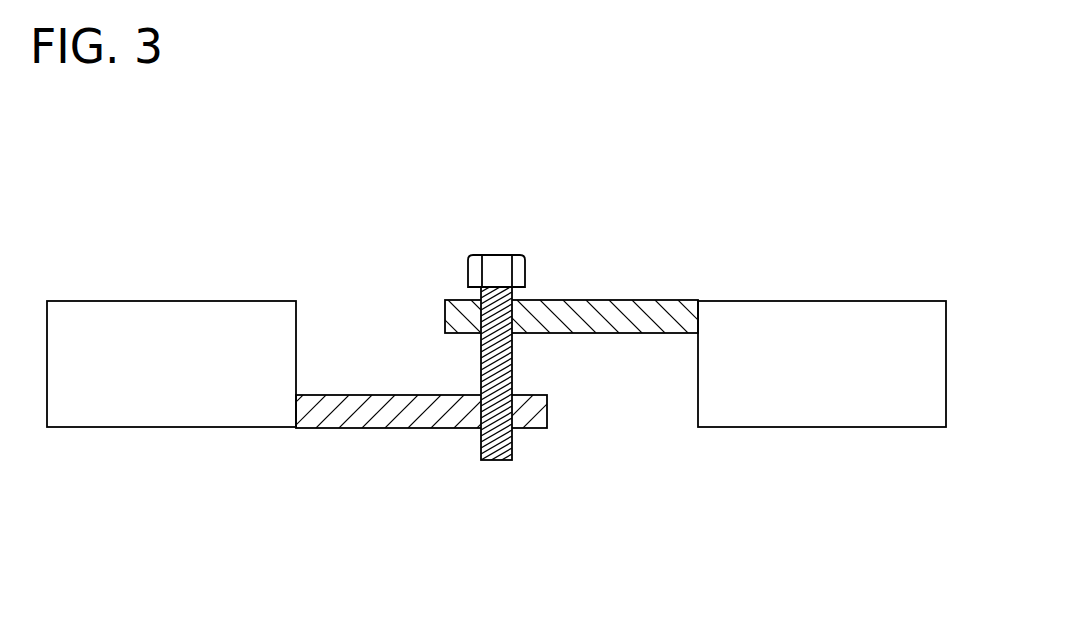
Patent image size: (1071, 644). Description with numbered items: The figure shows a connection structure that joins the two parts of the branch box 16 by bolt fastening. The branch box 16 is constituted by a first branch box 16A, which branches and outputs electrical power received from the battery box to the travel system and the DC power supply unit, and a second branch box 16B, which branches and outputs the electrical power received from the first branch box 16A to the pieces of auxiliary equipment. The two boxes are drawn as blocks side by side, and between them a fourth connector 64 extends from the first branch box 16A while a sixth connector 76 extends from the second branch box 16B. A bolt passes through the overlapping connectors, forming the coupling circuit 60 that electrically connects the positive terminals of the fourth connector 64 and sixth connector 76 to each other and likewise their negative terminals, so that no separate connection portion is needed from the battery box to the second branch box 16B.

The branch box 16 is at (496, 452).
The first branch box 16A is at (171, 419).
The second branch box 16B is at (822, 429).
The coupling circuit 60 is at (493, 222).
The fourth connector 64 is at (385, 420).
The sixth connector 76 is at (603, 325).